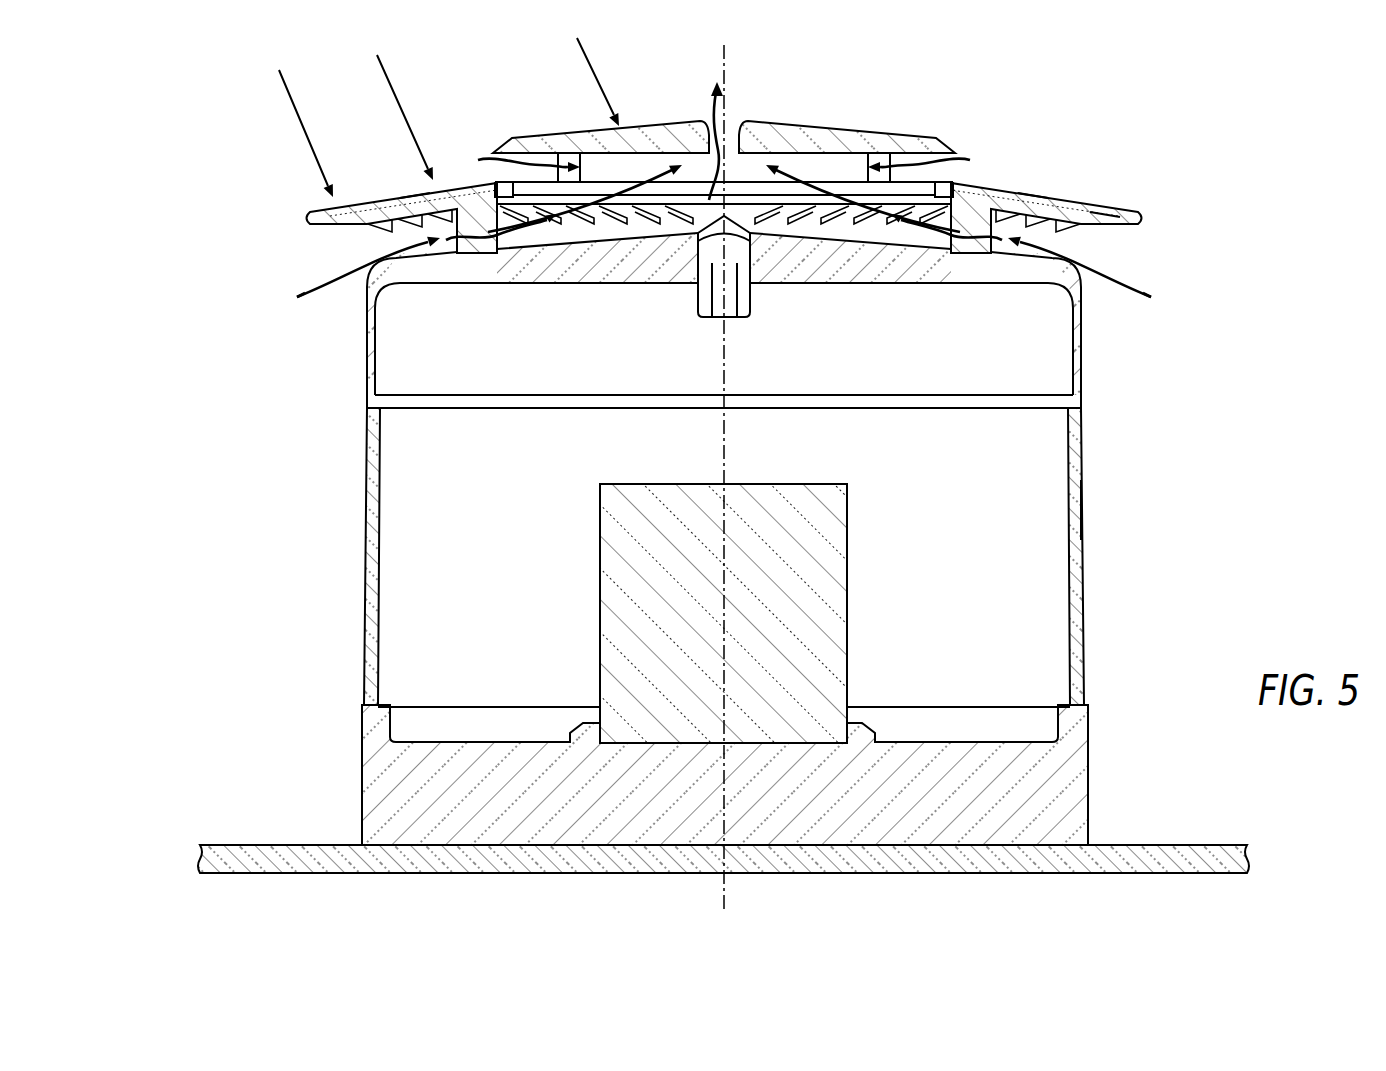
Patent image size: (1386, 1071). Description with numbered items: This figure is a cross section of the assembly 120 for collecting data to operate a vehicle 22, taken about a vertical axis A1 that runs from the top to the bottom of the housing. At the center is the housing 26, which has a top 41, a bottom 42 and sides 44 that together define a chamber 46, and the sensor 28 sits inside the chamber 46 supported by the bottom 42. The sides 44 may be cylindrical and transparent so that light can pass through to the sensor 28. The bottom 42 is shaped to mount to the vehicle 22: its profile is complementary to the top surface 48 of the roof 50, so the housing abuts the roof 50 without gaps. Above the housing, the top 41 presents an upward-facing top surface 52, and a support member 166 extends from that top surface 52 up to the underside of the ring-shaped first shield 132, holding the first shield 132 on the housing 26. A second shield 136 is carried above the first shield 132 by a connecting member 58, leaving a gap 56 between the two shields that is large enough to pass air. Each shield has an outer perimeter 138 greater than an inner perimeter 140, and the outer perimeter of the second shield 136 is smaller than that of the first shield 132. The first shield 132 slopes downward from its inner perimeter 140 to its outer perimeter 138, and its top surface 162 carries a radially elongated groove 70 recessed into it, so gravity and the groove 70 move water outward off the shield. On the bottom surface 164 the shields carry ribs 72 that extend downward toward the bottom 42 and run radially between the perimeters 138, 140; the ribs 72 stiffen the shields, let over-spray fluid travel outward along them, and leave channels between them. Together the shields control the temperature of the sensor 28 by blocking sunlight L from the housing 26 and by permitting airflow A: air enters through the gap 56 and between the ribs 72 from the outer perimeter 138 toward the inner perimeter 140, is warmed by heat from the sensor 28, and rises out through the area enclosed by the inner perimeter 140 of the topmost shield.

The vehicle 22 is at (209, 778).
The housing 26 is at (1158, 517).
The sensor 28 is at (610, 615).
The top 41 is at (1090, 370).
The bottom 42 is at (1077, 783).
The sides 44 is at (1084, 603).
The chamber 46 is at (503, 517).
The top surface 48 is at (313, 840).
The roof 50 is at (358, 862).
The top surface 52 is at (1016, 243).
The gap 56 is at (490, 176).
The member 58 is at (583, 163).
The groove 70 is at (413, 200).
The ribs 72 is at (383, 257).
The assembly 120 is at (1320, 113).
The first shield 132 is at (1108, 214).
The second shield 136 is at (810, 126).
The outer perimeter 138 is at (308, 219).
The inner perimeter 140 is at (514, 198).
The top surface 162 is at (400, 192).
The bottom surface 164 is at (358, 226).
The support member 166 is at (478, 256).
The airflow A is at (321, 290).
The vertical axis A1 is at (728, 64).
The sunlight L is at (603, 92).